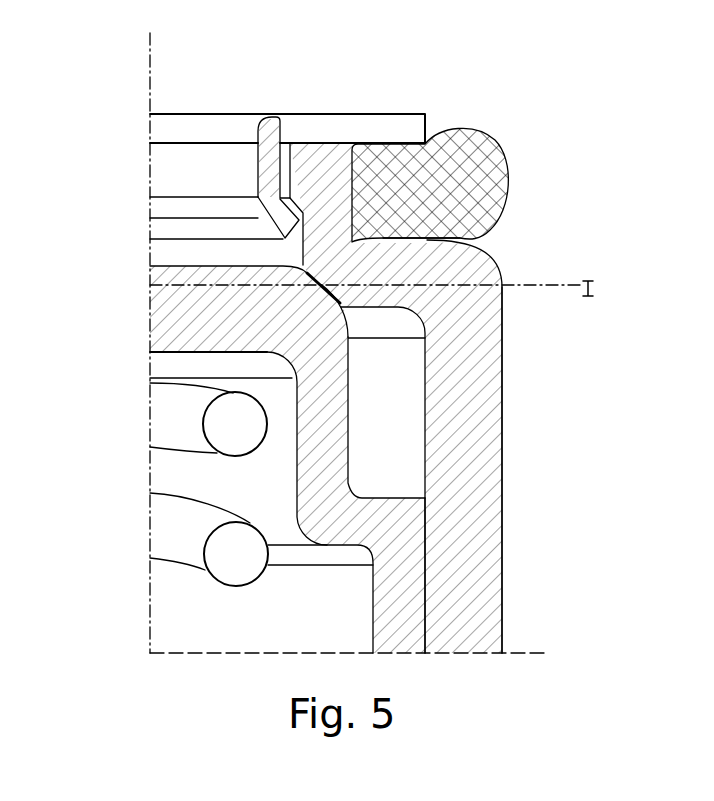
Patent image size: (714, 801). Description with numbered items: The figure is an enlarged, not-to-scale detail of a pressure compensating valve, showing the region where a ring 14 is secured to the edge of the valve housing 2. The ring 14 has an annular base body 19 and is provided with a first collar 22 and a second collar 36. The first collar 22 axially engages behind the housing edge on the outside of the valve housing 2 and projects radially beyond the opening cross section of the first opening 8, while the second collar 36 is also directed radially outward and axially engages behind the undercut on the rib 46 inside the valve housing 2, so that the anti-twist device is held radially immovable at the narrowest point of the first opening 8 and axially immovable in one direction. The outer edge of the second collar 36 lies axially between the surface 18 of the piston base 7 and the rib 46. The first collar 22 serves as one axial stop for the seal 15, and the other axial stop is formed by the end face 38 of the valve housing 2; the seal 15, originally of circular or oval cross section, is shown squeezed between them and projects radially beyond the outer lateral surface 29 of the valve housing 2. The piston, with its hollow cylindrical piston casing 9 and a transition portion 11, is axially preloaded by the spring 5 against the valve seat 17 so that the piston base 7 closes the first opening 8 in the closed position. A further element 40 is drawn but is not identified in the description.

The ring 14 is at (177, 160).
The first opening 8 is at (183, 195).
The surface 18 is at (207, 267).
The annular base body 19 is at (258, 176).
The inner wall 40 is at (292, 186).
The first collar 22 is at (327, 125).
The rib 46 is at (312, 185).
The seal 15 is at (470, 180).
The end face 38 is at (430, 237).
The outer lateral surface 29 is at (493, 325).
The valve seat 17 is at (330, 340).
The valve housing 2 is at (467, 432).
The transition portion 11 is at (330, 447).
The piston casing 9 is at (427, 555).
The second collar 36 is at (285, 238).
The piston base 7 is at (182, 337).
The spring 5 is at (235, 555).